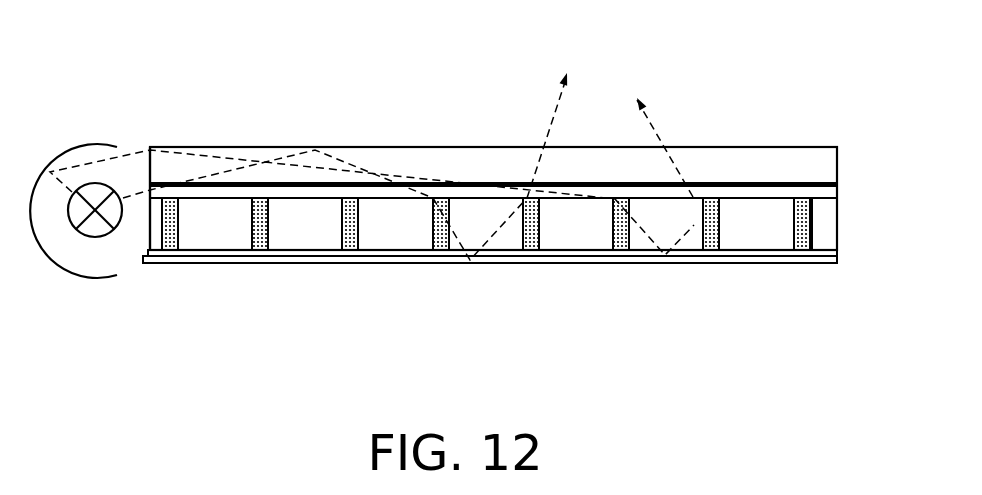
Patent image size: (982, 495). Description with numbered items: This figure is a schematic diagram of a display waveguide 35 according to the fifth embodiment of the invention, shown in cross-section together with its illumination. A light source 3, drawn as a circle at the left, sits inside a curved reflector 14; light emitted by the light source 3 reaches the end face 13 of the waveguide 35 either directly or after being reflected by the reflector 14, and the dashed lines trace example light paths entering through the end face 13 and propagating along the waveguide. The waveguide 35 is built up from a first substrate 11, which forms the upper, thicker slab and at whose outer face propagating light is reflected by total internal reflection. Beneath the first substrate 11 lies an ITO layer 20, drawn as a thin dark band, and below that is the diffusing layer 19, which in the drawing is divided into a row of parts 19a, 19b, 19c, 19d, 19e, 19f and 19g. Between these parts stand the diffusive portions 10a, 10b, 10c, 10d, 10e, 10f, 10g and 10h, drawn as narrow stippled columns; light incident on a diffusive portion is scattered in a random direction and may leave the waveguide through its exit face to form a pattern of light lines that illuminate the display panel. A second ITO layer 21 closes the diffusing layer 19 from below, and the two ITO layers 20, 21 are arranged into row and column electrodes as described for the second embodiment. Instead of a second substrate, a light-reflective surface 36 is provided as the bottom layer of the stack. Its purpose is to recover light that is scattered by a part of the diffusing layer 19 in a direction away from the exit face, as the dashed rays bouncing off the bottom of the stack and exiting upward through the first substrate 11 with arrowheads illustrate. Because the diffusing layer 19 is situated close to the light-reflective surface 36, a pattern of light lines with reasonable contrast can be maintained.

The light source 3 is at (92, 238).
The reflector 14 is at (80, 277).
The waveguide 35 is at (152, 97).
The first substrate 11 is at (758, 147).
The end face 13 is at (144, 231).
The ITO layer 20 is at (838, 188).
The diffusing layer 19 is at (840, 218).
The diffusing layer 19a is at (215, 224).
The diffusing layer 19b is at (305, 224).
The diffusing layer 19c is at (395, 224).
The diffusing layer 19d is at (486, 224).
The diffusing layer 19e is at (576, 224).
The diffusing layer 19f is at (666, 224).
The diffusing layer 19g is at (756, 224).
The diffusive portion 10a is at (172, 252).
The diffusive portion 10b is at (262, 252).
The diffusive portion 10c is at (352, 252).
The diffusive portion 10d is at (443, 252).
The diffusive portion 10e is at (533, 252).
The diffusive portion 10f is at (623, 252).
The diffusive portion 10g is at (713, 252).
The diffusive portion 10h is at (804, 252).
The ITO layer 21 is at (838, 252).
The light-reflective surface 36 is at (760, 264).